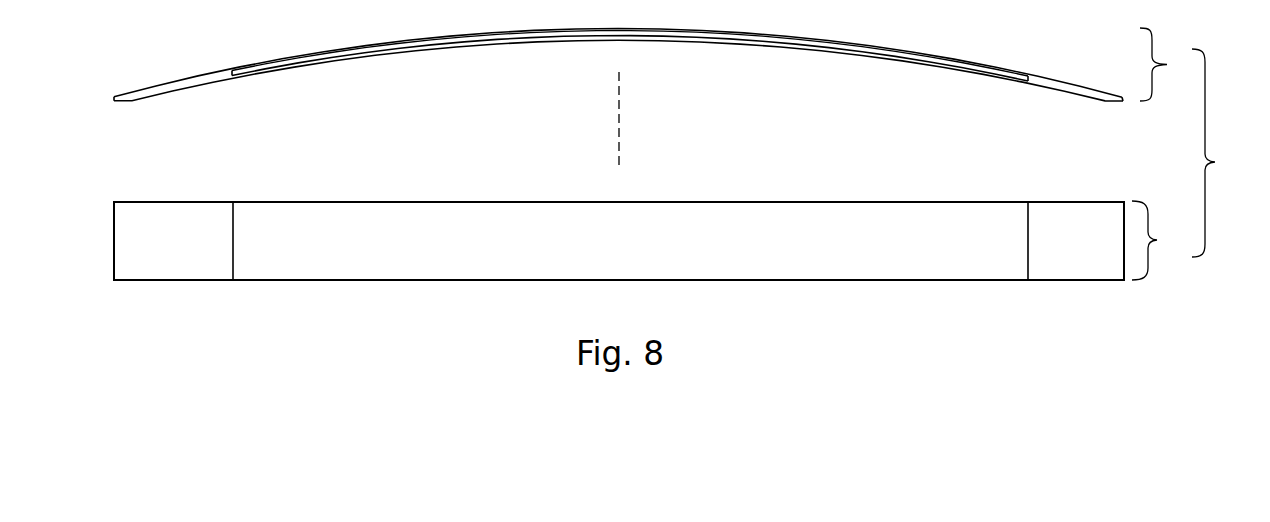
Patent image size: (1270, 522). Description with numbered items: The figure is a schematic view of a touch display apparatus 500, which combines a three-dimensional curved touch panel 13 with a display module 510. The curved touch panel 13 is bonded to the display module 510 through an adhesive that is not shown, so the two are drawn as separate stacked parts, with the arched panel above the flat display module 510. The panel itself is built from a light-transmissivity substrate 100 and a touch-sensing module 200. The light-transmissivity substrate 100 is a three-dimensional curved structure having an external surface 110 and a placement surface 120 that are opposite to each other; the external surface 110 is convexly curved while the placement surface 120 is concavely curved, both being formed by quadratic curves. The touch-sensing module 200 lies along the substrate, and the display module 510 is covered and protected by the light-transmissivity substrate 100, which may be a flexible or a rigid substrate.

The light-transmissivity substrate 100 is at (580, 94).
The external surface 110 is at (1075, 86).
The placement surface 120 is at (1081, 96).
The three-dimensional curved touch panel 13 is at (1167, 64).
The touch-sensing module 200 is at (930, 66).
The touch display apparatus 500 is at (685, 164).
The display module 510 is at (658, 240).